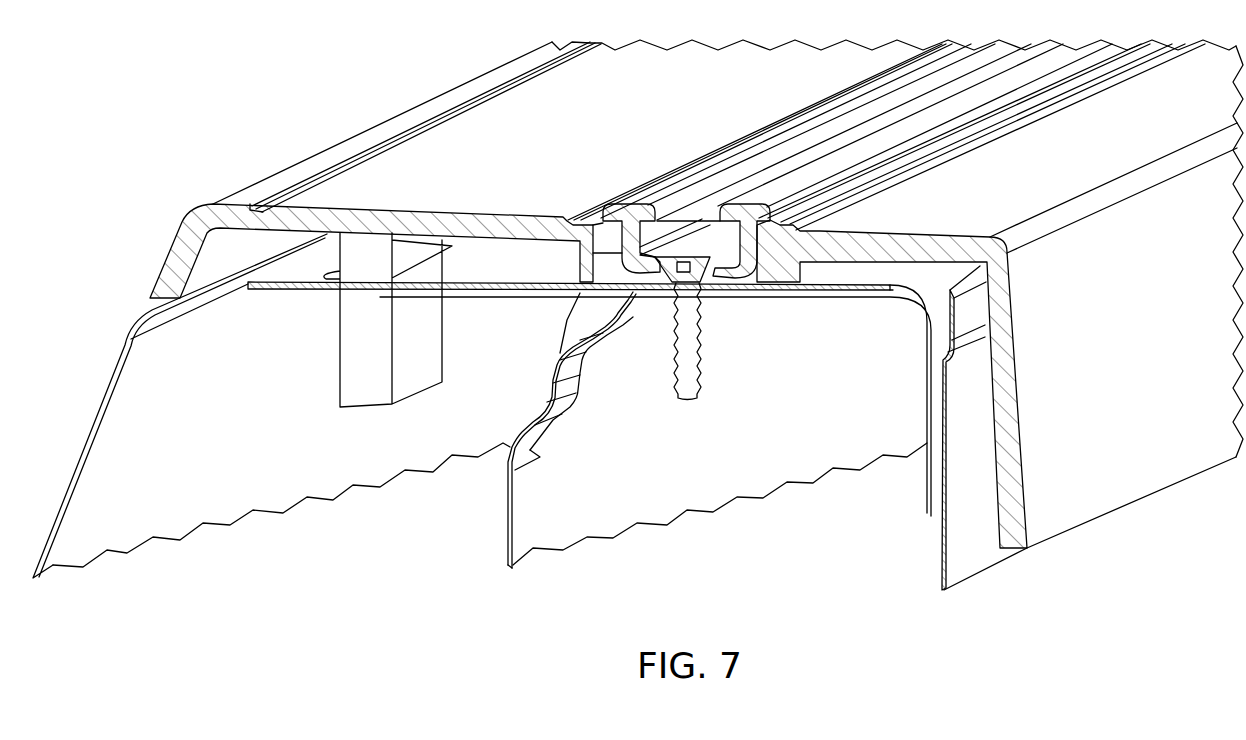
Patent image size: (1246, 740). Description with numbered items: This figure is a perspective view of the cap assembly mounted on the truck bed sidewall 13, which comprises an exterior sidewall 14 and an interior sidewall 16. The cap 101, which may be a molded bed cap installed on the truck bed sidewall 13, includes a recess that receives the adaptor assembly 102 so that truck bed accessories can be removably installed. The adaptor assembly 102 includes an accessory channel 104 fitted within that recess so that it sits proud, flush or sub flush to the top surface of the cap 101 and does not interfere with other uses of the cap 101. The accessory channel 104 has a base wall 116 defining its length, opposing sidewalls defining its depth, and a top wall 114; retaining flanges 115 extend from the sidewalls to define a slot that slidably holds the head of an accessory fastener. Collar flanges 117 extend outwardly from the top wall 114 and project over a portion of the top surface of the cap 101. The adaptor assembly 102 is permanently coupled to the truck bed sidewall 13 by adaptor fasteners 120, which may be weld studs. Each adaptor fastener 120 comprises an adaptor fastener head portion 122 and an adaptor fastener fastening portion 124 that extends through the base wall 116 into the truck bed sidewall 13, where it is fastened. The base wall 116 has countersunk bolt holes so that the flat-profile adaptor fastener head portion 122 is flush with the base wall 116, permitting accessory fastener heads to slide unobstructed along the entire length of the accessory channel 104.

The truck bed sidewall 13 is at (90, 371).
The exterior sidewall 14 is at (252, 405).
The interior sidewall 16 is at (668, 481).
The cap 101 is at (418, 150).
The adaptor assembly 102 is at (982, 112).
The accessory channel 104 is at (772, 173).
The top wall 114 is at (877, 150).
The retaining flanges 115 is at (747, 213).
The base wall 116 is at (717, 240).
The collar flanges 117 is at (760, 228).
The adaptor fasteners 120 is at (642, 390).
The adaptor fastener head portion 122 is at (702, 273).
The adaptor fastener fastening portion 124 is at (693, 400).